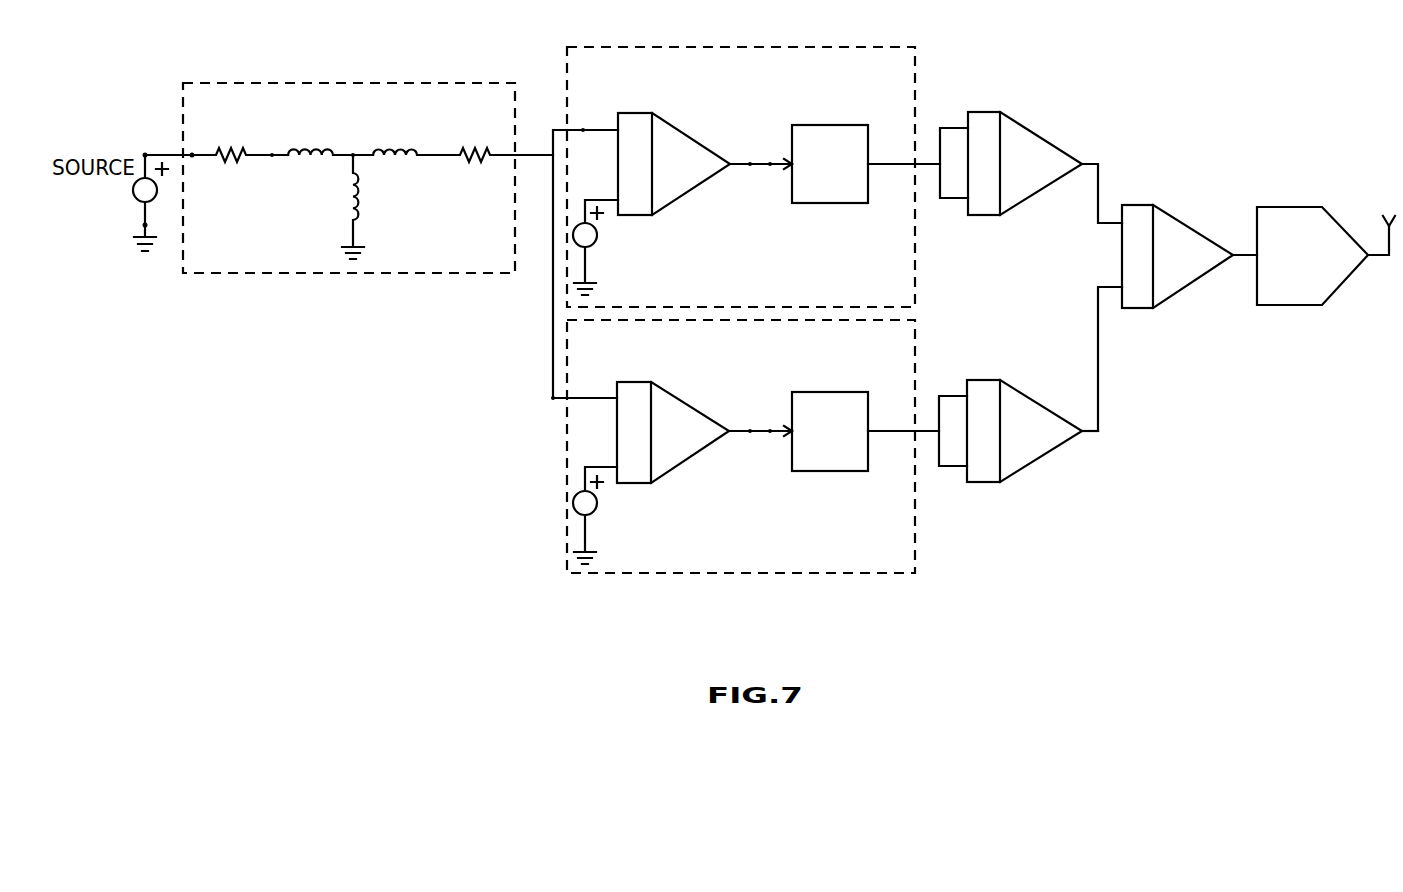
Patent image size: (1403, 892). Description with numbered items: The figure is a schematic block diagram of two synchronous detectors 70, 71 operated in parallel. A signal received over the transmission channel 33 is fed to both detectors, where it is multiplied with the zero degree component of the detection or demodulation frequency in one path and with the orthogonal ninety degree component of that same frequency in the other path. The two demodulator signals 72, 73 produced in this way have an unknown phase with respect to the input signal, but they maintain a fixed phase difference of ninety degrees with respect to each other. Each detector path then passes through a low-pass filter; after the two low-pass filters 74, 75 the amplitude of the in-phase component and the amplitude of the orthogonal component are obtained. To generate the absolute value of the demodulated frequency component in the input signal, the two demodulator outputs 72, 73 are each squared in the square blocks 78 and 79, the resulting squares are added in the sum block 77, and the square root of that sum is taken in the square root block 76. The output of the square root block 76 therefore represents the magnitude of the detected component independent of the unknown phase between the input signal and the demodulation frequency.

The transmission channel 33 is at (265, 274).
The synchronous detector 70 is at (778, 177).
The synchronous detector 71 is at (778, 446).
The demodulator signal 72 is at (915, 163).
The demodulator signal 73 is at (907, 433).
The low-pass filter 74 is at (798, 190).
The low-pass filter 75 is at (802, 463).
The square root block 76 is at (1272, 215).
The sum block 77 is at (1173, 218).
The square block 78 is at (1030, 140).
The square block 79 is at (1017, 397).